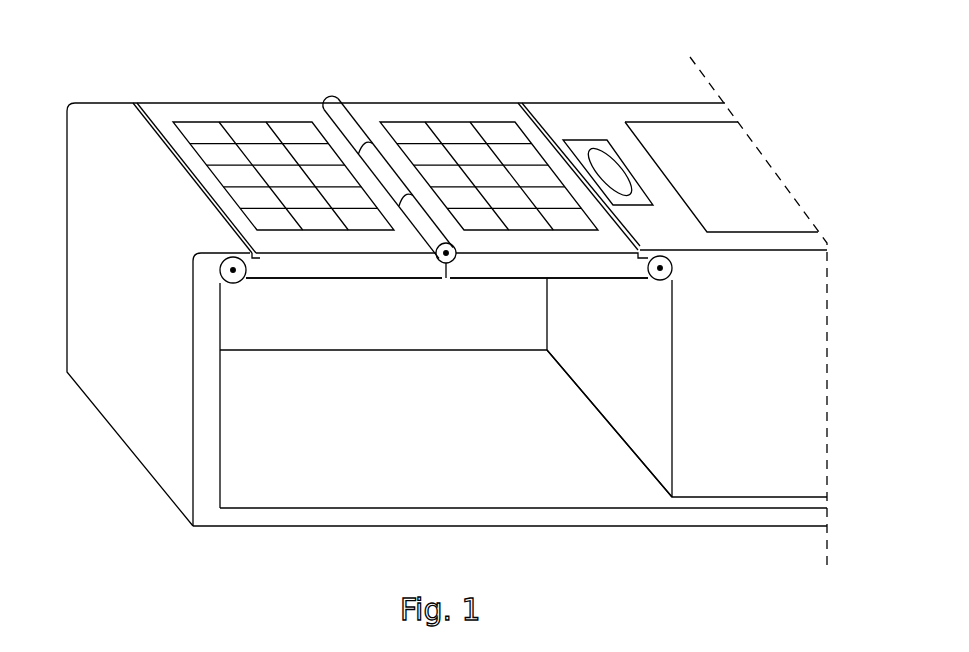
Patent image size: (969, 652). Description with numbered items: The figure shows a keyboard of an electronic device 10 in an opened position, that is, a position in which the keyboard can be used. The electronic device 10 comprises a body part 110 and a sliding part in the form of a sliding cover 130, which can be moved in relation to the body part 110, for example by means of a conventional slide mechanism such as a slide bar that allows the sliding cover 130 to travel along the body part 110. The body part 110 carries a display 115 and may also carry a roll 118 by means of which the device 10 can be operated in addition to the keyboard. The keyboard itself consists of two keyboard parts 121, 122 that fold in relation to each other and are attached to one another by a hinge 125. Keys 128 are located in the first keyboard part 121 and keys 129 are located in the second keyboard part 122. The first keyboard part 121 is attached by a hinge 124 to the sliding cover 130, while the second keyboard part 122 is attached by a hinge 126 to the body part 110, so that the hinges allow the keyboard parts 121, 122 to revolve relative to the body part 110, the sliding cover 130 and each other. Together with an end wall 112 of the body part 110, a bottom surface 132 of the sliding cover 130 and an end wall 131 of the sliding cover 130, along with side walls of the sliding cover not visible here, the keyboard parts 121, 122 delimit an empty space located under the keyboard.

The electronic device 10 is at (101, 41).
The body part 110 is at (773, 365).
The end wall 112 is at (645, 415).
The display 115 is at (730, 158).
The roll 118 is at (612, 170).
The first keyboard part 121 is at (342, 263).
The second keyboard part 122 is at (522, 263).
The hinge 124 is at (235, 283).
The hinge 125 is at (335, 100).
The hinge 126 is at (662, 283).
The keys 128 is at (247, 128).
The keys 129 is at (455, 128).
The sliding cover 130 is at (287, 528).
The end wall 131 is at (113, 296).
The bottom surface 132 is at (357, 447).